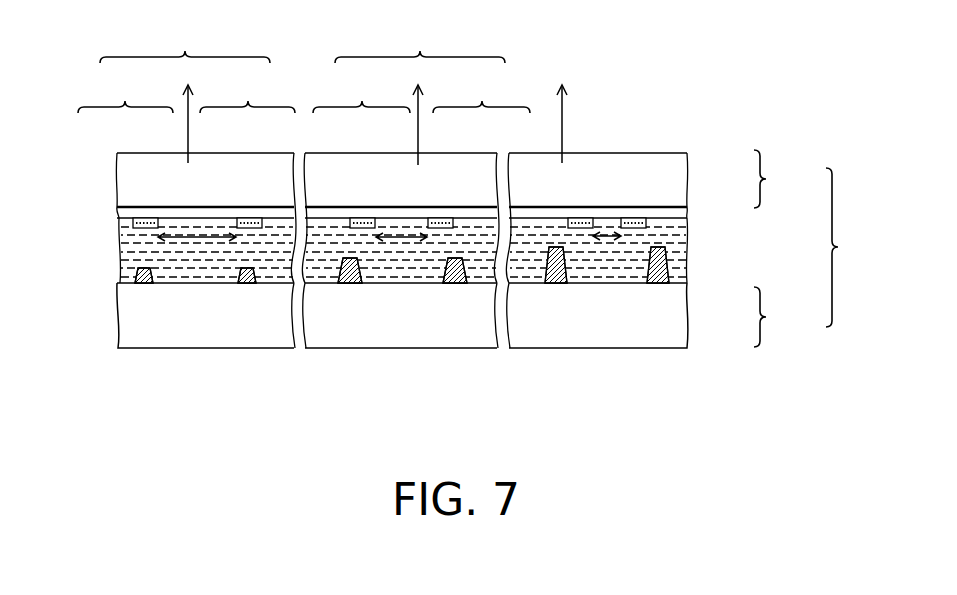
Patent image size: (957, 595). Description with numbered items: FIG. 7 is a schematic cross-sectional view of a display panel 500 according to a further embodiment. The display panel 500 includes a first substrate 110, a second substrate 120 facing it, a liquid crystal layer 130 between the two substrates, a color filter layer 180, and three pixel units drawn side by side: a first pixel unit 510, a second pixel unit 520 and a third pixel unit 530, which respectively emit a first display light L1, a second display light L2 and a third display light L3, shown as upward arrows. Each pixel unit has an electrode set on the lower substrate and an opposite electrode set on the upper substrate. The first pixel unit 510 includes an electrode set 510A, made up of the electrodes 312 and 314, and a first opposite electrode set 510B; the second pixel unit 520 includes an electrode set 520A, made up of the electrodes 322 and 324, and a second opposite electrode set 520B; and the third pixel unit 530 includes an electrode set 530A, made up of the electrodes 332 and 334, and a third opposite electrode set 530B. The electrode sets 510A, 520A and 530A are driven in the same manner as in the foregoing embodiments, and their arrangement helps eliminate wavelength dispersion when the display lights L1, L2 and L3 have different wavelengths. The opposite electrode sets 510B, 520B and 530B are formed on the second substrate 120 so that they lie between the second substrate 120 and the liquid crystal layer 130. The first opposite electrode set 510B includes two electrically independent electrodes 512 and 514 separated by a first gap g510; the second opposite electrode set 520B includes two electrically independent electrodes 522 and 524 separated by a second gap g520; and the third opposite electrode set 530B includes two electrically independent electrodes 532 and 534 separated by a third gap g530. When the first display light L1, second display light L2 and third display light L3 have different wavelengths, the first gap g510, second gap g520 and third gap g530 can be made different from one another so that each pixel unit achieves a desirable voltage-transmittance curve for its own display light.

The first substrate 110 is at (140, 320).
The second substrate 120 is at (612, 162).
The liquid crystal layer 130 is at (530, 268).
The color filter layer 180 is at (113, 216).
The display panel 500 is at (797, 445).
The first pixel unit 510 is at (852, 247).
The electrode set 510A is at (788, 317).
The first opposite electrode set 510B is at (788, 179).
The electrode 512 is at (583, 217).
The electrode 514 is at (637, 217).
The electrode 312 is at (570, 267).
The electrode 314 is at (677, 268).
The first gap g510 is at (610, 237).
The second pixel unit 520 is at (420, 42).
The electrode set 520A is at (481, 90).
The second opposite electrode set 520B is at (361, 90).
The electrode 522 is at (363, 217).
The electrode 524 is at (435, 217).
The electrode 322 is at (362, 272).
The electrode 324 is at (463, 272).
The second gap g520 is at (393, 237).
The third pixel unit 530 is at (185, 42).
The electrode set 530A is at (247, 90).
The third opposite electrode set 530B is at (125, 90).
The electrode 532 is at (143, 217).
The electrode 534 is at (240, 217).
The electrode 332 is at (158, 278).
The electrode 334 is at (262, 270).
The third gap g530 is at (190, 236).
The first display light L1 is at (562, 140).
The second display light L2 is at (418, 142).
The third display light L3 is at (188, 143).